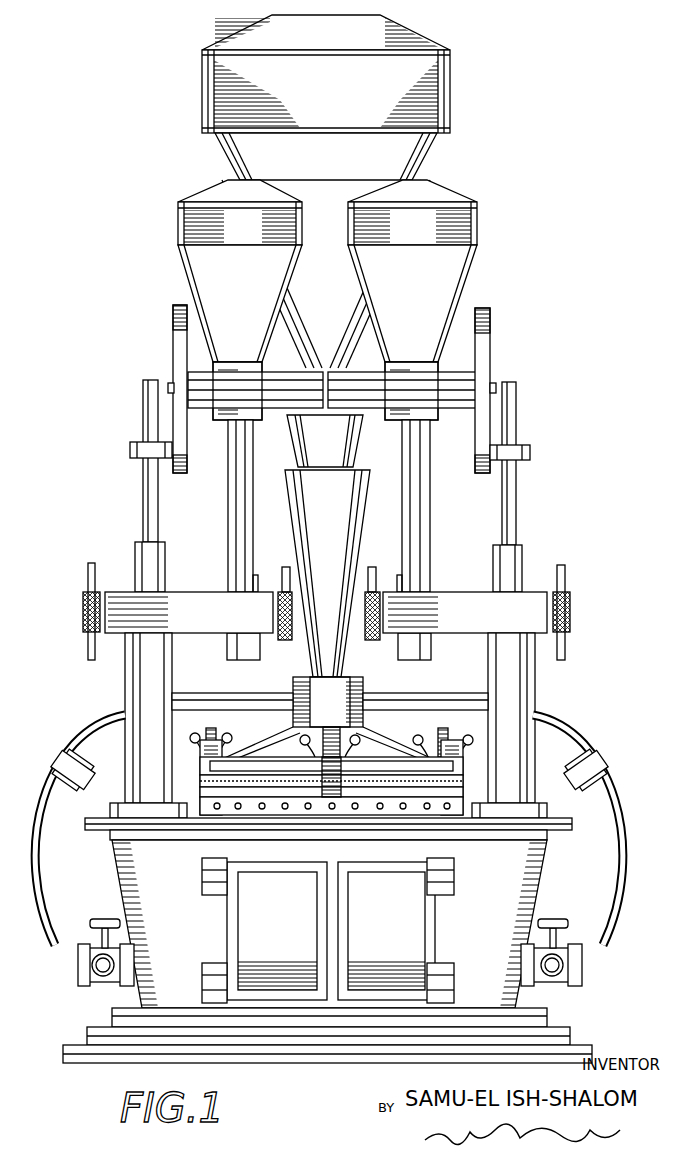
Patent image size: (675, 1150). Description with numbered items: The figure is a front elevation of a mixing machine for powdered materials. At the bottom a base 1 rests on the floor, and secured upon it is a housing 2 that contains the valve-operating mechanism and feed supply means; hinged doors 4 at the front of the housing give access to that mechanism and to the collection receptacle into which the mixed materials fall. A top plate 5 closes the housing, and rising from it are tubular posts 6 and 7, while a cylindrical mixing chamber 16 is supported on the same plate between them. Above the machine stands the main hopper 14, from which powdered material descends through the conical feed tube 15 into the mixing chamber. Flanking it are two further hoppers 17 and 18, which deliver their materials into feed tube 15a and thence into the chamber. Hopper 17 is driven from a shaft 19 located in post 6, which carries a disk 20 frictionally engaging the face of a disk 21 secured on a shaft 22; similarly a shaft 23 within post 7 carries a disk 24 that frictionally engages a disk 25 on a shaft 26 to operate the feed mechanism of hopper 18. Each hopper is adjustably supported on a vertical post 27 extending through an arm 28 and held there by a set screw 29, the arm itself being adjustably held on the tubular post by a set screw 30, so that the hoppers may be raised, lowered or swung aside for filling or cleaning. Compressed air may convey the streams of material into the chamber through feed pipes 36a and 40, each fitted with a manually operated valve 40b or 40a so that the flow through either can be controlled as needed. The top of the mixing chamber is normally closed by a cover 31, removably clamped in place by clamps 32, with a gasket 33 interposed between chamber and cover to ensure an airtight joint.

The base 1 is at (565, 1035).
The housing 2 is at (329, 924).
The hinged doors 4 is at (328, 930).
The top plate 5 is at (572, 826).
The tubular post 6 is at (137, 668).
The tubular post 7 is at (535, 683).
The main hopper 14 is at (326, 97).
The conical feed tube 15 is at (326, 323).
The feed tube 15a is at (327, 598).
The mixing chamber 16 is at (296, 815).
The hopper 17 is at (240, 300).
The hopper 18 is at (412, 300).
The shaft 19 is at (143, 398).
The disk 20 is at (130, 451).
The disk 21 is at (173, 322).
The shaft 22 is at (168, 387).
The shaft 23 is at (516, 508).
The disk 24 is at (530, 452).
The disk 25 is at (490, 350).
The shaft 26 is at (496, 387).
The vertical post 27 is at (228, 518).
The arm 28 is at (326, 612).
The set screw 29 is at (286, 567).
The set screw 30 is at (83, 600).
The cover 31 is at (362, 732).
The clamps 32 is at (211, 740).
The gasket 33 is at (218, 800).
The feed pipe 36a is at (90, 750).
The feed pipe 40 is at (565, 742).
The manually operated valve 40a is at (585, 975).
The manually operated valve 40b is at (95, 986).